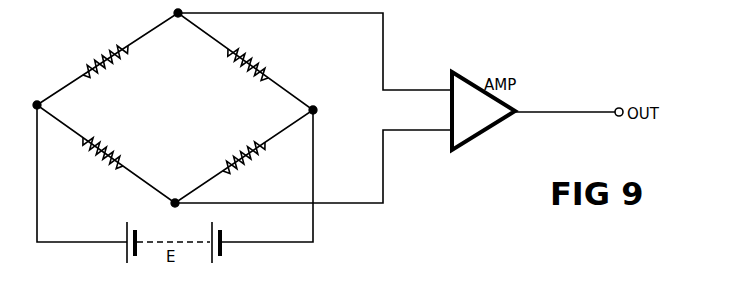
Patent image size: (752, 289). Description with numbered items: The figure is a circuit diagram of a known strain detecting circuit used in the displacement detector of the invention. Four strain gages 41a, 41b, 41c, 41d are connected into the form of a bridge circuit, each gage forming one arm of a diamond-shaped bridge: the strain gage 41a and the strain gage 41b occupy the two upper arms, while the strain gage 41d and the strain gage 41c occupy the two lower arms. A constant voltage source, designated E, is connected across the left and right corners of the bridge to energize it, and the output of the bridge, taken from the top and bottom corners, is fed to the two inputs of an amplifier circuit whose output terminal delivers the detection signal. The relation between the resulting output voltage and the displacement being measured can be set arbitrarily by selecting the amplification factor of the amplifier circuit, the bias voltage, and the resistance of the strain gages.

The strain gage 41a is at (110, 70).
The strain gage 41b is at (239, 71).
The strain gage 41c is at (237, 155).
The strain gage 41d is at (110, 150).